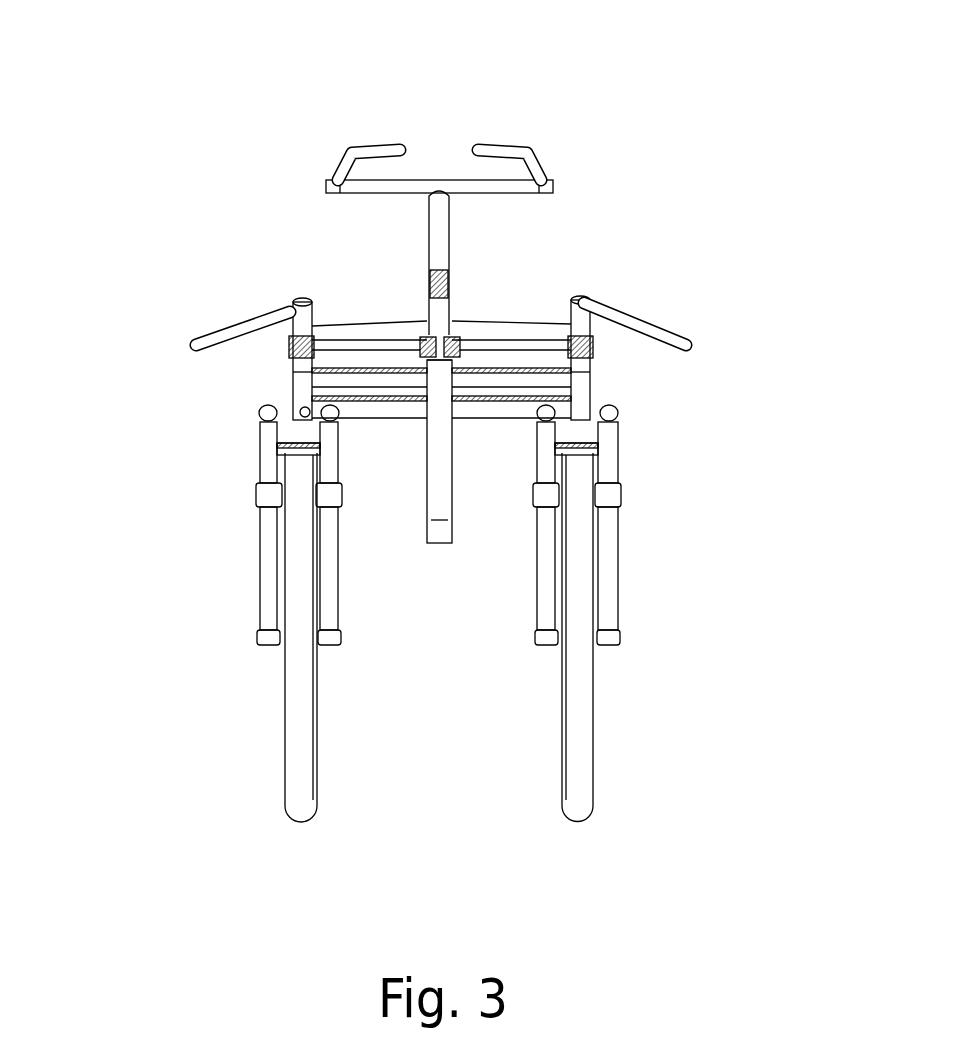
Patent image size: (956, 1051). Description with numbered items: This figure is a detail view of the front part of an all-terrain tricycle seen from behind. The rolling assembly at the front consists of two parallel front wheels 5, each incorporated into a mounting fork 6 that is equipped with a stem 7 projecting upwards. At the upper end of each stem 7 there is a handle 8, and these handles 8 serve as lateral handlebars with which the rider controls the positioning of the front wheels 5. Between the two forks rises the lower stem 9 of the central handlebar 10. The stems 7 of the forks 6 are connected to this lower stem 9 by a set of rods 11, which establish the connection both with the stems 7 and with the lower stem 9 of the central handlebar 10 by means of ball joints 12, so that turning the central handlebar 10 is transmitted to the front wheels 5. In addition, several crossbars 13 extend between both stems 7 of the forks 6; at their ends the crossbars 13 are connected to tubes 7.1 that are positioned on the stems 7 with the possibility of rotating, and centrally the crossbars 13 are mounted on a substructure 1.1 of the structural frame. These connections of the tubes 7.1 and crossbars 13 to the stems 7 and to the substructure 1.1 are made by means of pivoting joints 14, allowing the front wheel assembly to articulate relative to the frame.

The substructure 1.1 is at (437, 522).
The front wheels 5 is at (582, 722).
The mounting forks 6 is at (268, 566).
The stems 7 is at (298, 302).
The tubes 7.1 is at (293, 378).
The handles 8 is at (215, 333).
The lower stem 9 is at (430, 262).
The central handlebar 10 is at (421, 186).
The rods 11 is at (512, 347).
The ball joints 12 is at (452, 340).
The crossbars 13 is at (512, 410).
The pivoting joints 14 is at (310, 408).